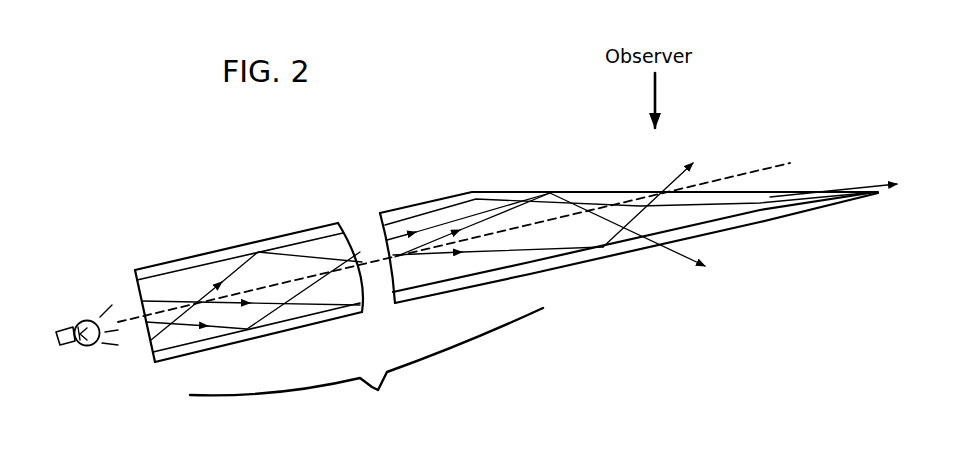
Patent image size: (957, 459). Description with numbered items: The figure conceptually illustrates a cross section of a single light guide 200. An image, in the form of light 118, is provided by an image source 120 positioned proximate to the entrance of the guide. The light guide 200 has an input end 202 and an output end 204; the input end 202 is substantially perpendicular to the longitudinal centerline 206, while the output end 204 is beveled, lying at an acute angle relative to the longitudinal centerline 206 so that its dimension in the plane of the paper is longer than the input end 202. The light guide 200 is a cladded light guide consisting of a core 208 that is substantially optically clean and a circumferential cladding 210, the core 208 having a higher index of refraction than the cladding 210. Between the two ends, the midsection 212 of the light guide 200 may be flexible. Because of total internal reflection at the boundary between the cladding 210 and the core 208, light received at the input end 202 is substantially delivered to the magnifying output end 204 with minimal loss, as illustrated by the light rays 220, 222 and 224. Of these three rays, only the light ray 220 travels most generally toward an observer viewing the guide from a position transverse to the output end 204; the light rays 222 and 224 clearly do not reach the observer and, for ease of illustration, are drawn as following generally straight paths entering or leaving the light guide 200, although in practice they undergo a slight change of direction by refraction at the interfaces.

The light 118 is at (103, 345).
The image source 120 is at (85, 318).
The light guide 200 is at (256, 170).
The input end 202 is at (151, 348).
The output end 204 is at (540, 192).
The longitudinal centerline 206 is at (475, 236).
The core 208 is at (260, 270).
The cladding 210 is at (157, 268).
The midsection 212 is at (366, 365).
The light ray 220 is at (668, 199).
The light ray 222 is at (853, 180).
The light ray 224 is at (644, 236).